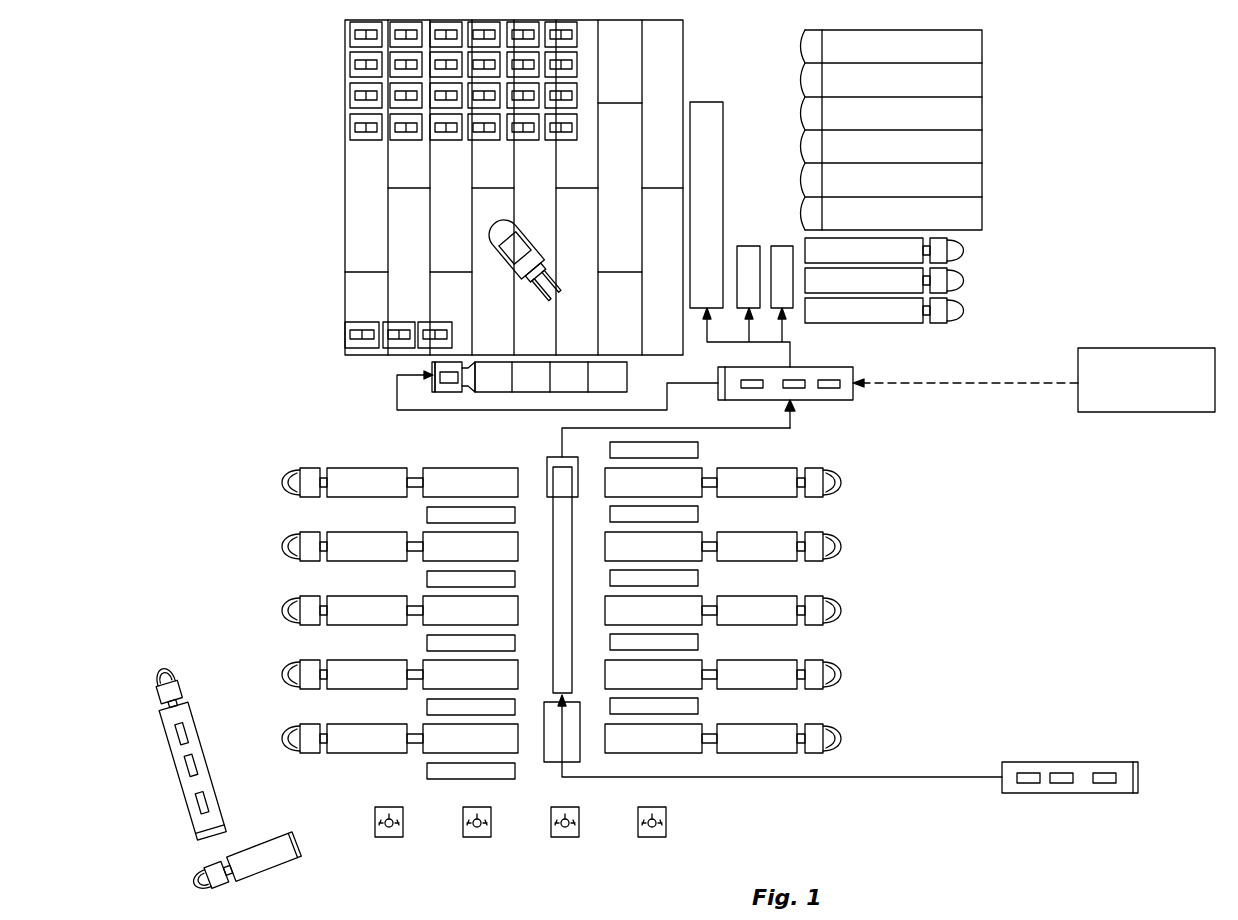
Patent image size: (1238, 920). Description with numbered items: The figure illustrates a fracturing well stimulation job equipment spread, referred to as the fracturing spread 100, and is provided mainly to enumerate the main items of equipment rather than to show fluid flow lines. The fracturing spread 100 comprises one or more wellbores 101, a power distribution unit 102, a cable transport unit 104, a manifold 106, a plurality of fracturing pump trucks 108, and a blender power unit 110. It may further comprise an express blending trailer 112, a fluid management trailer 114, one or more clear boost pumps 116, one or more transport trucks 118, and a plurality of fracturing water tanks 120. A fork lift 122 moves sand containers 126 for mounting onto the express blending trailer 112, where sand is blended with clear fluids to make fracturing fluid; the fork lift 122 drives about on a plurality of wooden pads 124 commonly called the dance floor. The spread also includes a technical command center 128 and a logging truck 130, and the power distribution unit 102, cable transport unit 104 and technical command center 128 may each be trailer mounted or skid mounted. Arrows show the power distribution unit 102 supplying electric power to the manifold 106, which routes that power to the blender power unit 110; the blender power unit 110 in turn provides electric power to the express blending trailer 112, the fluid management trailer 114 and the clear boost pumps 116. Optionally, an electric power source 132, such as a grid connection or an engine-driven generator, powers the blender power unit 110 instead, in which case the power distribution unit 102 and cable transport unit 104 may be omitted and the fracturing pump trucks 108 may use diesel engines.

The fracturing spread 100 is at (125, 88).
The wellbore 101 is at (566, 838).
The power distribution unit 102 is at (1083, 778).
The cable transport unit 104 is at (553, 762).
The manifold 106 is at (562, 520).
The fracturing pump trucks 108 is at (845, 612).
The blender power unit 110 is at (843, 400).
The express blending trailer 112 is at (497, 375).
The fluid management trailer 114 is at (707, 100).
The clear boost pumps 116 is at (752, 245).
The transport trucks 118 is at (970, 255).
The fracturing water tanks 120 is at (960, 147).
The fork lift 122 is at (492, 248).
The wooden pads 124 is at (367, 292).
The sand containers 126 is at (348, 130).
The technical command center 128 is at (198, 787).
The logging truck 130 is at (262, 858).
The electric power source 132 is at (1150, 382).